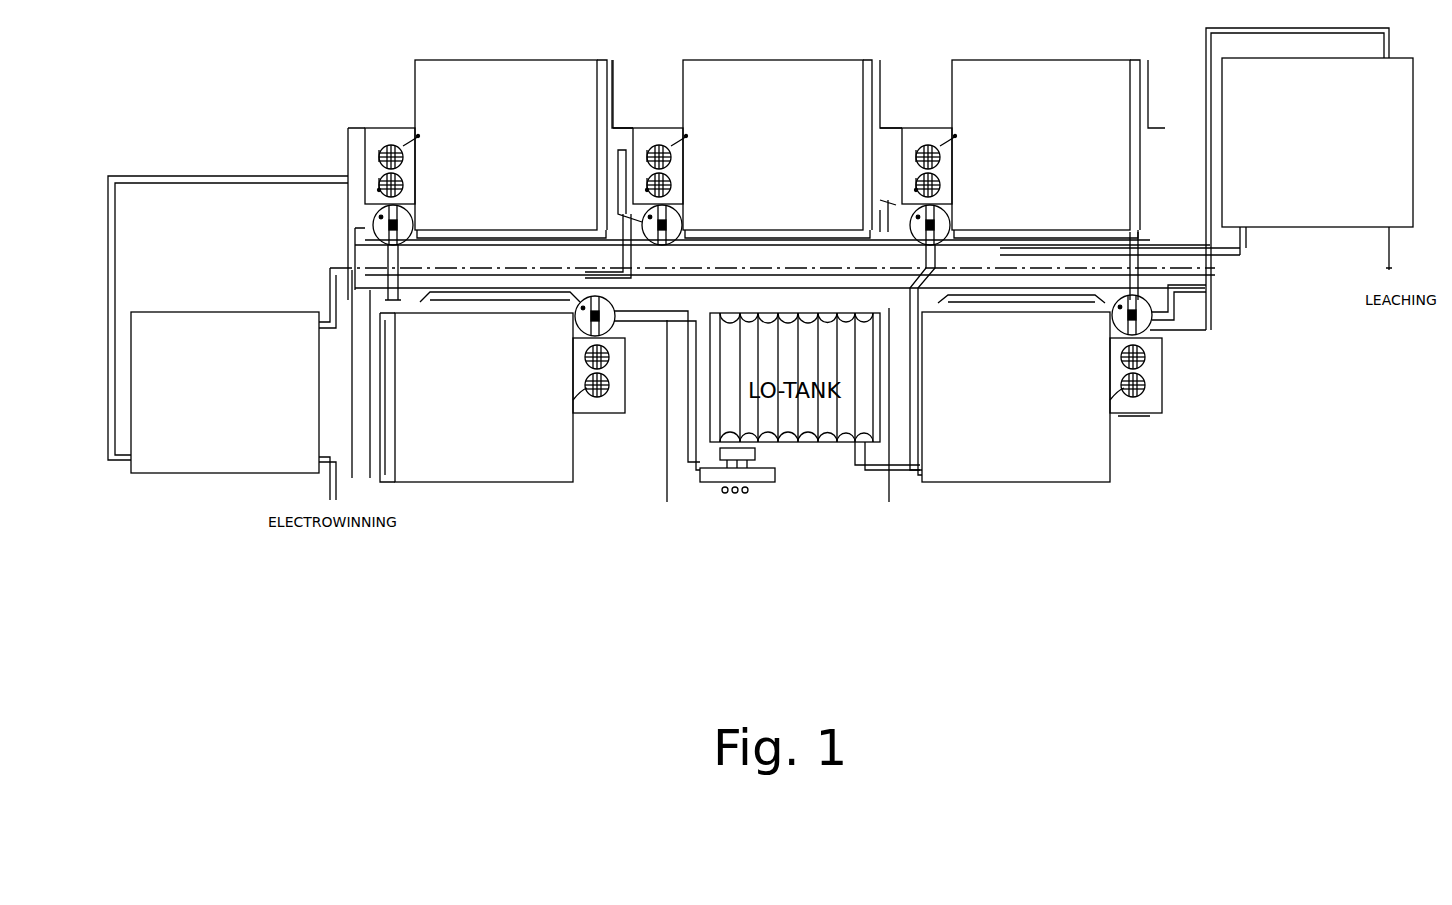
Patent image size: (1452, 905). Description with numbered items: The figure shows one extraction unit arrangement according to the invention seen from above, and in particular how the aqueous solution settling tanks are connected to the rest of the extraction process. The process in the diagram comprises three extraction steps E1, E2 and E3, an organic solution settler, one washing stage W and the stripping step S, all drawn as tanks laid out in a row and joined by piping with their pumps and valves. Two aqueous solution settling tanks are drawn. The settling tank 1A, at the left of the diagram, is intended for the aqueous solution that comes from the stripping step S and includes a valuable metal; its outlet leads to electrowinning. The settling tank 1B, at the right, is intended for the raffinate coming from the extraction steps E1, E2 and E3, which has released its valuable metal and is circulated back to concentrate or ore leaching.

The settling tank 1A is at (197, 477).
The settling tank 1B is at (1283, 229).
The stripping step S is at (524, 149).
The extraction step E1 is at (1016, 388).
The extraction step E2 is at (1058, 149).
The extraction step E3 is at (792, 149).
The washing stage W is at (480, 387).